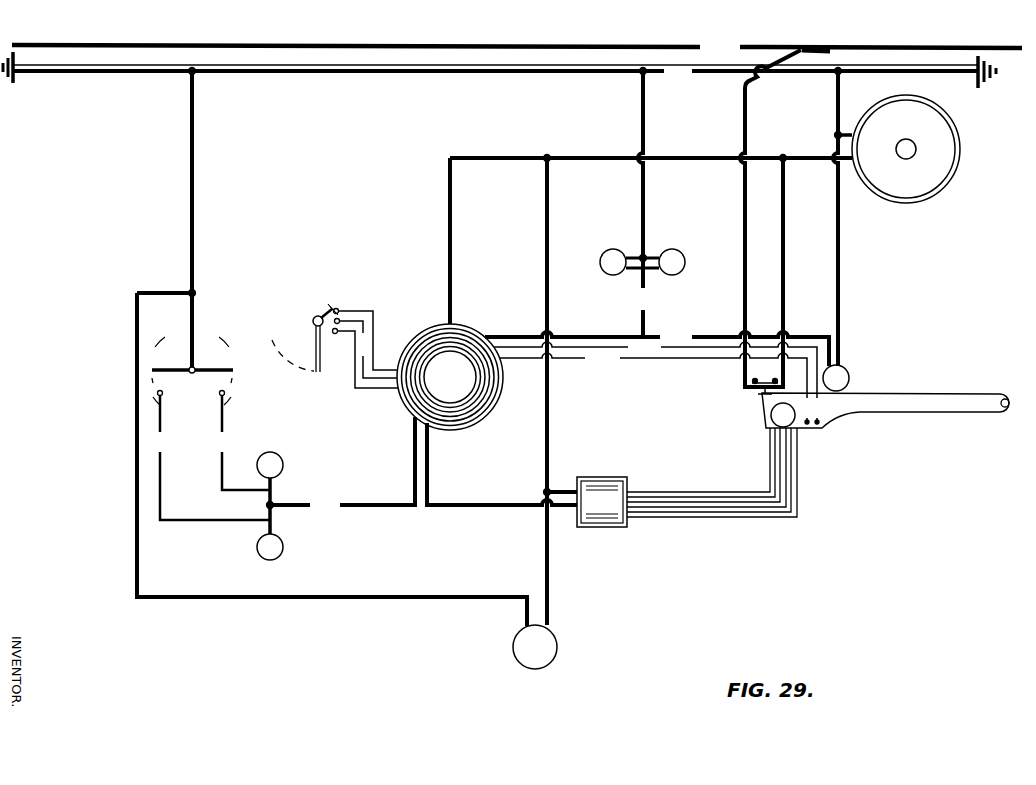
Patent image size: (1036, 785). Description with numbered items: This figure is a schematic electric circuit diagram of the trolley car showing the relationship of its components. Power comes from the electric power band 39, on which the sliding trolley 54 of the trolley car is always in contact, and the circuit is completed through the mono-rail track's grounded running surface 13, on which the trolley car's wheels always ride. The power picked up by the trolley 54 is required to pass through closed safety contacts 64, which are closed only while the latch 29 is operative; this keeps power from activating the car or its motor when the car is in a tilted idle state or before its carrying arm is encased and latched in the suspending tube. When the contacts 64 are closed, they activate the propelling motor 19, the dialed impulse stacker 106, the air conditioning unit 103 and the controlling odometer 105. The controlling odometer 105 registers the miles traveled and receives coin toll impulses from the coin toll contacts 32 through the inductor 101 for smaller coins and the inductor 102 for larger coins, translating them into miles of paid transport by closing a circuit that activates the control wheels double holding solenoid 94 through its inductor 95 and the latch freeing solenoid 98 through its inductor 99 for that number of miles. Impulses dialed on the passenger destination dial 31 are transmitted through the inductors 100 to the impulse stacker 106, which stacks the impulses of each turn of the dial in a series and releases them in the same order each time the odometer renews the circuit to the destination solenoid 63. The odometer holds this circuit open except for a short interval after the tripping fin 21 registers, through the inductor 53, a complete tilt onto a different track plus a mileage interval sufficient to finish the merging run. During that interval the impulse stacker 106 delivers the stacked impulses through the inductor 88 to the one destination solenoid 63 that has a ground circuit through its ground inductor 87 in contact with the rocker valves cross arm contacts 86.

The electric power band 39 is at (517, 48).
The grounded running surface 13 is at (499, 70).
The sliding trolley 54 is at (768, 78).
The propelling motor 19 is at (922, 122).
The control wheels double holding solenoid 94 is at (642, 262).
The inductor 95 is at (642, 204).
The inductor 99 is at (657, 347).
The inductor 102 is at (656, 381).
The inductor 101 is at (654, 386).
The safety contacts 64 is at (761, 249).
The latch freeing solenoid 98 is at (836, 378).
The latch 29 is at (930, 403).
The destination dial 31 is at (783, 415).
The coin toll contacts 32 is at (812, 408).
The inductors 100 is at (713, 472).
The dialed impulse stacker 106 is at (527, 475).
The controlling odometer 105 is at (450, 377).
The tripping fin 21 is at (316, 333).
The inductor 53 is at (366, 349).
The rocker valves cross arm contacts 86 is at (192, 238).
The ground inductor 87 is at (210, 456).
The destination solenoid 63 is at (270, 506).
The inductor 88 is at (342, 466).
The air conditioning unit 103 is at (347, 480).